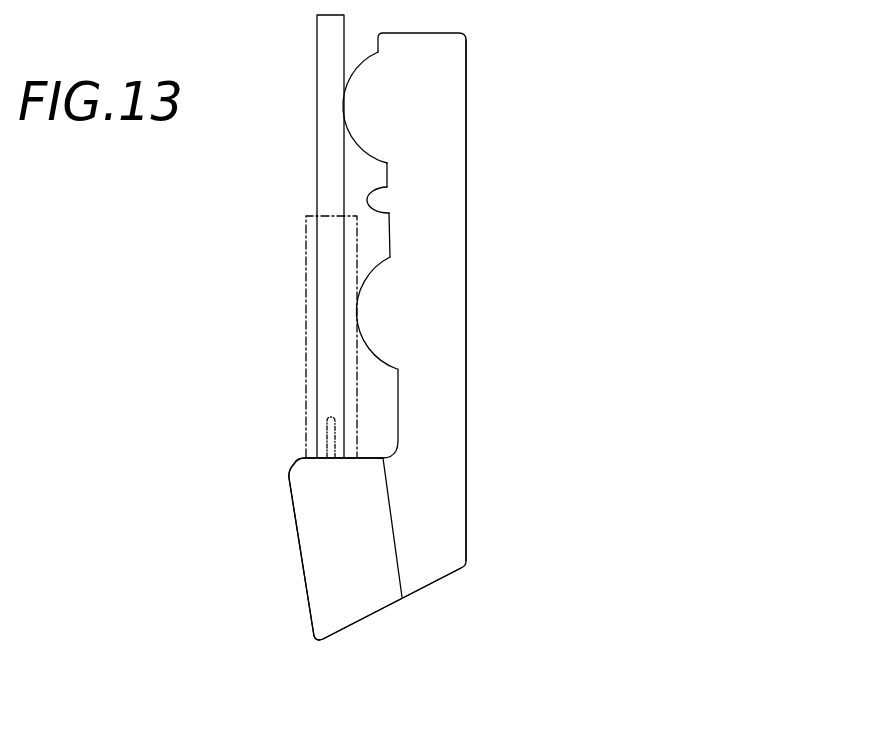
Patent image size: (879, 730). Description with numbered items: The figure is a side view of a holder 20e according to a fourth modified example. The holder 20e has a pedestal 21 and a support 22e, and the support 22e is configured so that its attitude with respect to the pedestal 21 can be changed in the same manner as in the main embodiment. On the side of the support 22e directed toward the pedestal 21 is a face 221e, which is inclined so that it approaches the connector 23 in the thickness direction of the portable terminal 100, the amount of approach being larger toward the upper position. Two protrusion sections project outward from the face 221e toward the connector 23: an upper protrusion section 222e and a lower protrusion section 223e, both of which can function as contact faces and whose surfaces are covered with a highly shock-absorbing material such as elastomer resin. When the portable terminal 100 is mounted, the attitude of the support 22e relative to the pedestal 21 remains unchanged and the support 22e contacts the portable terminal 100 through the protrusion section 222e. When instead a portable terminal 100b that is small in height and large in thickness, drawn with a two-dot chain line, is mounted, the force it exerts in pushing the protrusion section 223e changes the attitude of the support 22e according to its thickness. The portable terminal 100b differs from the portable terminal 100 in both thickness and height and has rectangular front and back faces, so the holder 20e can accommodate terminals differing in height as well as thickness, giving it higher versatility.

The holder 20e is at (382, 336).
The pedestal 21 is at (315, 570).
The support 22e is at (453, 433).
The connector 23 is at (330, 433).
The portable terminal 100 is at (325, 178).
The portable terminal 100b is at (310, 260).
The face 221e is at (390, 207).
The protrusion section 222e is at (358, 106).
The protrusion section 223e is at (368, 307).